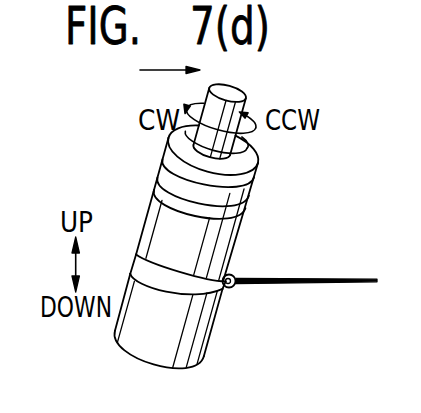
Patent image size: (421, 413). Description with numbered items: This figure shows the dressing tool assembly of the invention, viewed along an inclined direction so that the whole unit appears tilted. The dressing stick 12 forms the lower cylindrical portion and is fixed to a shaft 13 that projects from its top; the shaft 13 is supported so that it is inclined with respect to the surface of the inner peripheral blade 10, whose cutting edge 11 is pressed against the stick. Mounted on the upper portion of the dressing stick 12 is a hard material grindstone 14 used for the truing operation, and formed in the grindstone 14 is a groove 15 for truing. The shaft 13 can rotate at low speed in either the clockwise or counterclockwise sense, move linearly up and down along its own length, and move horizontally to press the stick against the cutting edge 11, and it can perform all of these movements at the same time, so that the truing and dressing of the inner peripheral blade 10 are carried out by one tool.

The inner peripheral blade 10 is at (320, 278).
The cutting edge 11 is at (237, 288).
The dressing stick 12 is at (138, 320).
The shaft 13 is at (207, 98).
The hard material grindstone 14 is at (188, 175).
The groove 15 is at (249, 207).